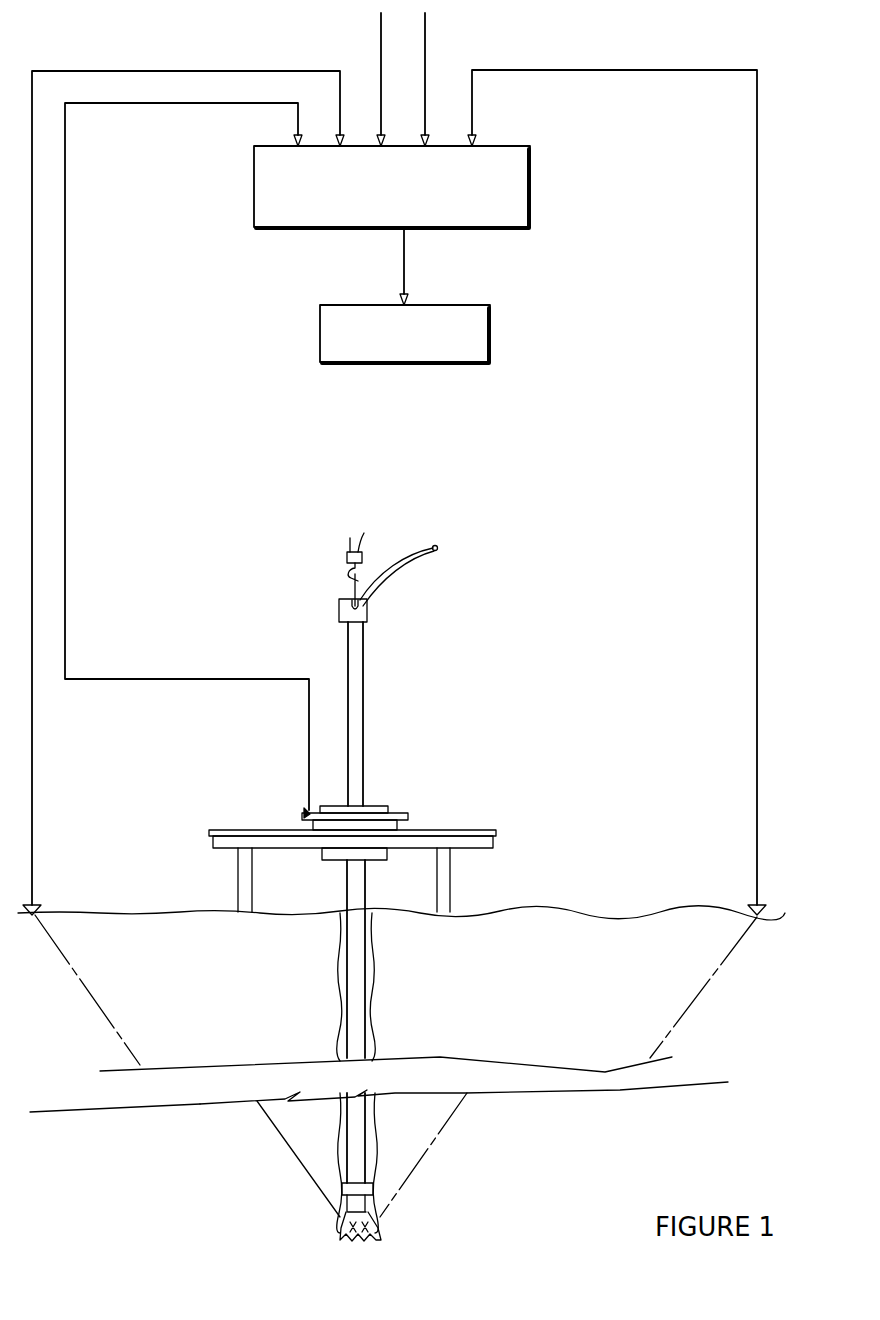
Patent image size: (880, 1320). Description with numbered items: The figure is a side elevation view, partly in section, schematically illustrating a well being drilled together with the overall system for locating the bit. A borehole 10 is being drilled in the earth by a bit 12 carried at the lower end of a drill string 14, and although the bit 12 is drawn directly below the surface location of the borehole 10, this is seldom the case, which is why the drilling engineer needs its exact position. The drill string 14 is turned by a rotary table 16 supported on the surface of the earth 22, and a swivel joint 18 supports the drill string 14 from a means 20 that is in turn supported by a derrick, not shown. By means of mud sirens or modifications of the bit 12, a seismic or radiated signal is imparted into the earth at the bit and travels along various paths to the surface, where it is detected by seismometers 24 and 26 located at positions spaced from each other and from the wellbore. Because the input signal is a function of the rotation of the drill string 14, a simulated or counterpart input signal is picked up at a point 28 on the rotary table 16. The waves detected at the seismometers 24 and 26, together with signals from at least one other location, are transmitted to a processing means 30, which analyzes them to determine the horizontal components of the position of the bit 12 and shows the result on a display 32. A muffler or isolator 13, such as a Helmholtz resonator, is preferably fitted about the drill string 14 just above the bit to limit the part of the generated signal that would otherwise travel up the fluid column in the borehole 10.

The borehole 10 is at (372, 955).
The bit 12 is at (380, 1228).
The isolator 13 is at (345, 1188).
The drill string 14 is at (357, 1160).
The rotary table 16 is at (395, 813).
The swivel joint 18 is at (339, 607).
The means 20 is at (345, 558).
The surface of the earth 22 is at (525, 912).
The seismometer 24 is at (37, 906).
The seismometer 26 is at (757, 906).
The point 28 is at (308, 811).
The processing means 30 is at (530, 163).
The display 32 is at (490, 333).